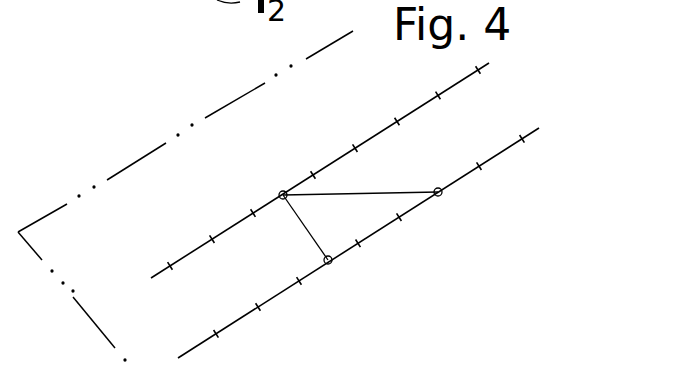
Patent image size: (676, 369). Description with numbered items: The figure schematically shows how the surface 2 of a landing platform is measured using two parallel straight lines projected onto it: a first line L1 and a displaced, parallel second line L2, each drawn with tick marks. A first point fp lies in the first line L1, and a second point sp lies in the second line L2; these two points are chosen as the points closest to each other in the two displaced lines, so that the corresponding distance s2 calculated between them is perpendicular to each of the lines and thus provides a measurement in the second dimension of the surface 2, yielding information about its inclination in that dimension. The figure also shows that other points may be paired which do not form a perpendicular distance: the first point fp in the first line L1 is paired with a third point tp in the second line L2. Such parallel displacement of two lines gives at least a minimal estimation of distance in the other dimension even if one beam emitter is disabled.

The surface 2 is at (140, 157).
The first line L1 is at (413, 112).
The second line L2 is at (497, 157).
The first point fp is at (340, 183).
The second point sp is at (344, 277).
The third point tp is at (458, 209).
The distance s2 is at (292, 228).